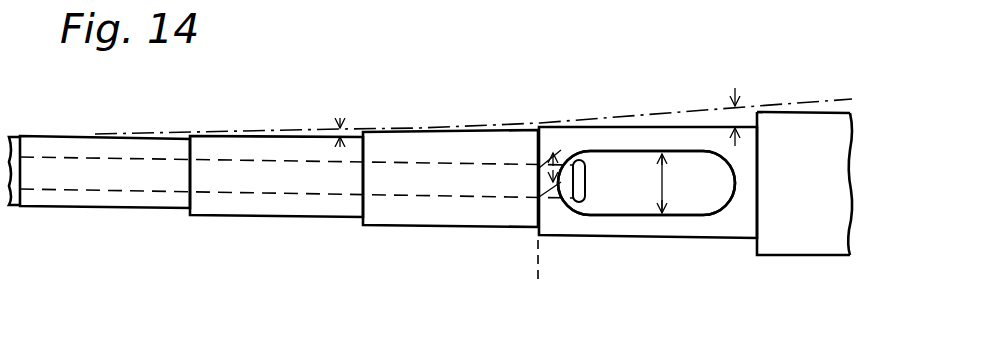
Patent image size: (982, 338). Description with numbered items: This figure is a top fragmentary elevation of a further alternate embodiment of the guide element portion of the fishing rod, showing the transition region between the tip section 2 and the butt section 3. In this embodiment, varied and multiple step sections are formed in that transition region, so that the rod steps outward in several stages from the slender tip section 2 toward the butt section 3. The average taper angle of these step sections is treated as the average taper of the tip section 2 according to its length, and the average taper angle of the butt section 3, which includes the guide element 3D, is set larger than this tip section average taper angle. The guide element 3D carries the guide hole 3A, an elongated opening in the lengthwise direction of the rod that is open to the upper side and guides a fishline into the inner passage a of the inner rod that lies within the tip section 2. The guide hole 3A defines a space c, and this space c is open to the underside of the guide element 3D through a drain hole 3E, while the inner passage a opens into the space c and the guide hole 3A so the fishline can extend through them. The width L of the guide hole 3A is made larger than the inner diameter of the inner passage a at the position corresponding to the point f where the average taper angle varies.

The tip section 2 is at (114, 127).
The butt section 3 is at (778, 260).
The guide hole 3A is at (638, 217).
The drain hole 3E is at (646, 242).
The guide element 3D is at (608, 222).
The inner passage a is at (291, 194).
The point where the average taper angle varies f is at (535, 279).
The width of the guide hole L is at (665, 190).
The space c is at (706, 197).